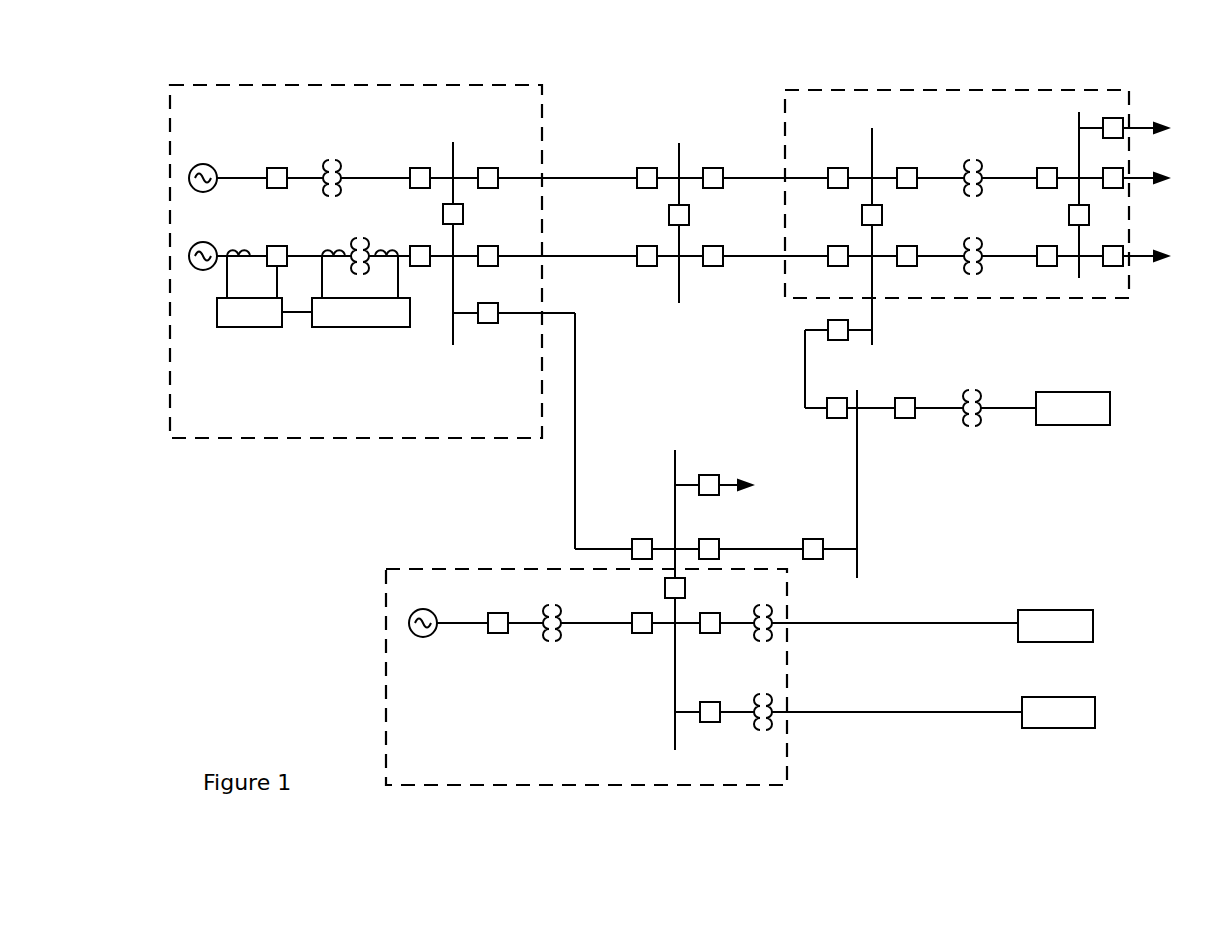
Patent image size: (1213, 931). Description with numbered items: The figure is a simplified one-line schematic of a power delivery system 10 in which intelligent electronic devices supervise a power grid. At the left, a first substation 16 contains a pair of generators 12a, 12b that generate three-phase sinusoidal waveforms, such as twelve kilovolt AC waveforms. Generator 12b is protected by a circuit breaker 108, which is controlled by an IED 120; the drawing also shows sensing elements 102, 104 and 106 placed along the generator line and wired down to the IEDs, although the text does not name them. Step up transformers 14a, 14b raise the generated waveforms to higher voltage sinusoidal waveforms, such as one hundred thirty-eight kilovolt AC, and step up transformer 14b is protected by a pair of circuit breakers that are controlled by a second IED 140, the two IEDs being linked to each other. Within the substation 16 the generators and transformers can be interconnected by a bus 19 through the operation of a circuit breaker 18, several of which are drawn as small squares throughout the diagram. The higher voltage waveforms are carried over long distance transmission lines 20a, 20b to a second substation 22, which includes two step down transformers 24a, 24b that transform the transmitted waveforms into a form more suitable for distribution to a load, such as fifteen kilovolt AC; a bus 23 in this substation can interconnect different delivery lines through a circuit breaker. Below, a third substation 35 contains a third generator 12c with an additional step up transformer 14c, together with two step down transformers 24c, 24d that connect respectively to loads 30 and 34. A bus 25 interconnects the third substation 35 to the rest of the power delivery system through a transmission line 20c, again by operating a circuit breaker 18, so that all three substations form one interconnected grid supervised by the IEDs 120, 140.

The power delivery system 10 is at (714, 98).
The generator 12a is at (216, 192).
The generator 12b is at (214, 276).
The third generator 12c is at (430, 639).
The step up transformer 14a is at (332, 160).
The step up transformer 14b is at (357, 245).
The step up transformer 14c is at (552, 605).
The substation 16 is at (542, 121).
The circuit breaker 18 is at (490, 190).
The bus 19 is at (453, 149).
The long distance transmission line 20a is at (598, 178).
The long distance transmission line 20b is at (586, 256).
The transmission line 20c is at (600, 549).
The second substation 22 is at (1014, 89).
The bus 23 is at (872, 147).
The step down transformer 24a is at (974, 164).
The step down transformer 24b is at (974, 242).
The step down transformer 24c is at (762, 605).
The step down transformer 24d is at (764, 729).
The bus 25 is at (675, 466).
The load 30 is at (1096, 626).
The load 34 is at (1098, 713).
The third substation 35 is at (460, 567).
The current transformer 102 is at (241, 248).
The current transformer 104 is at (321, 248).
The current transformer 106 is at (390, 248).
The circuit breaker 108 is at (276, 246).
The IED 120 is at (246, 328).
The IED 140 is at (372, 328).